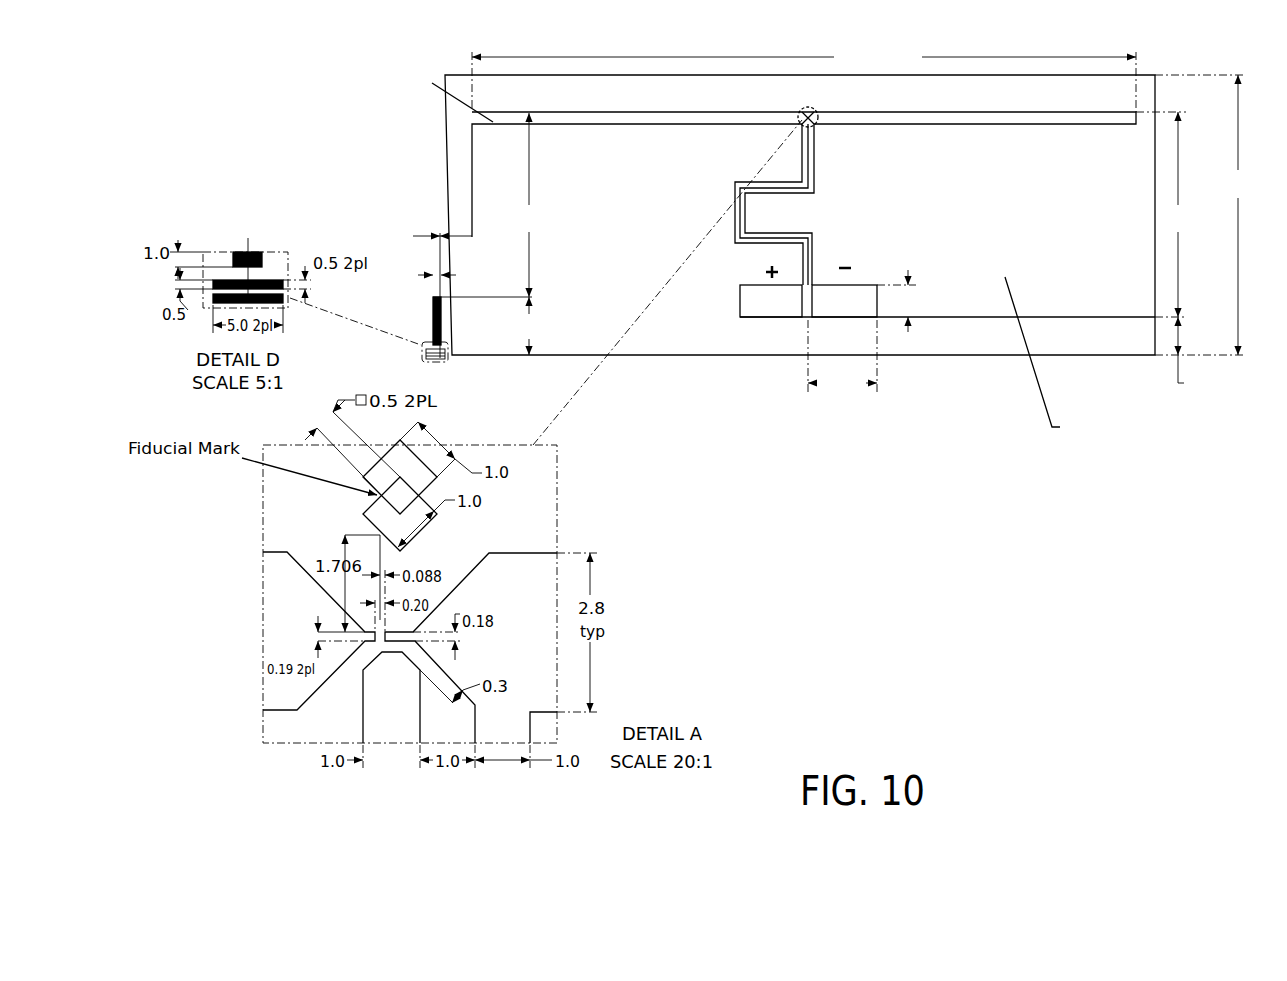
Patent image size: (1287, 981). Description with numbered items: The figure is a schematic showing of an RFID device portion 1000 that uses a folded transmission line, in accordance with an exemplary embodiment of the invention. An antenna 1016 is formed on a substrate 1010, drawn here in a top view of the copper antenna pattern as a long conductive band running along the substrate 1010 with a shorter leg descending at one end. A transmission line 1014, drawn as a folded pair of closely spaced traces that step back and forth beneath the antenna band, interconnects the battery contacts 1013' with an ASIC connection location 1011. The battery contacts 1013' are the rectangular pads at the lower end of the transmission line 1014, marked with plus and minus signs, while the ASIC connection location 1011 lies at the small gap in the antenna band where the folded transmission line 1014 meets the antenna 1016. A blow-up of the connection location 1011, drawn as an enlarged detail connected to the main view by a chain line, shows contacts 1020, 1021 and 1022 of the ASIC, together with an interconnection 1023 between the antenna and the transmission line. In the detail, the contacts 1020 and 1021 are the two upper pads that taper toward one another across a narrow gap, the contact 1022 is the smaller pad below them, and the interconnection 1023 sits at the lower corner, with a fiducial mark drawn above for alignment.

The RFID device portion 1000 is at (196, 133).
The substrate 1010 is at (641, 232).
The ASIC connection location 1011 is at (803, 102).
The battery contacts 1013' is at (890, 281).
The transmission line 1014 is at (817, 157).
The antenna 1016 is at (973, 125).
The contact of the ASIC 1020 is at (312, 609).
The contact of the ASIC 1021 is at (512, 600).
The contact of the ASIC 1022 is at (414, 712).
The interconnection 1023 is at (524, 740).